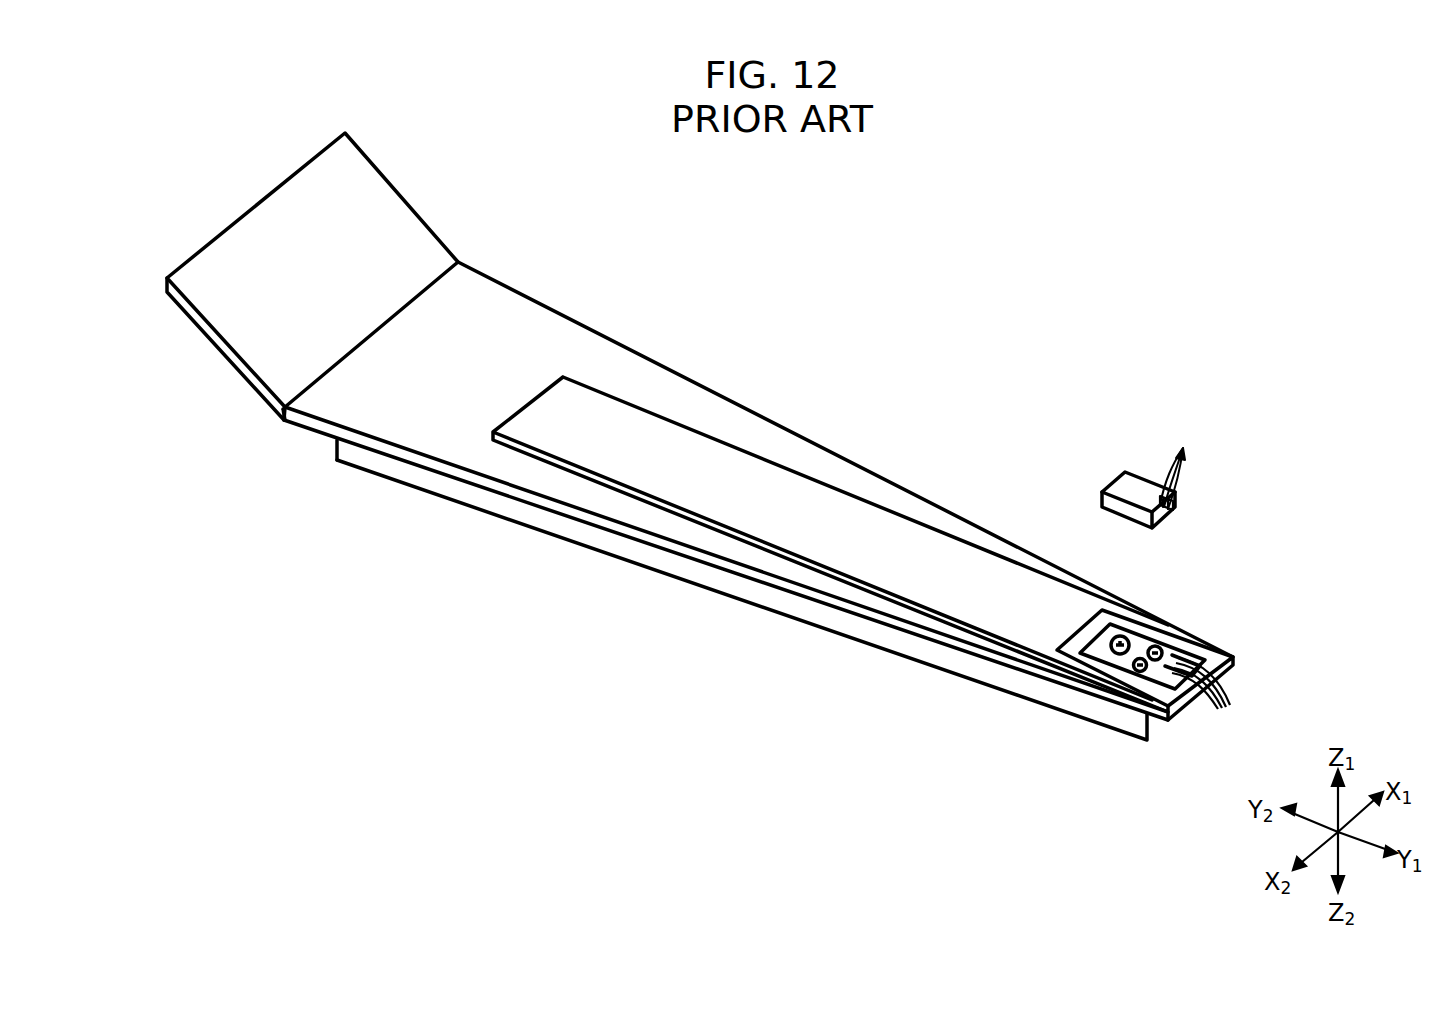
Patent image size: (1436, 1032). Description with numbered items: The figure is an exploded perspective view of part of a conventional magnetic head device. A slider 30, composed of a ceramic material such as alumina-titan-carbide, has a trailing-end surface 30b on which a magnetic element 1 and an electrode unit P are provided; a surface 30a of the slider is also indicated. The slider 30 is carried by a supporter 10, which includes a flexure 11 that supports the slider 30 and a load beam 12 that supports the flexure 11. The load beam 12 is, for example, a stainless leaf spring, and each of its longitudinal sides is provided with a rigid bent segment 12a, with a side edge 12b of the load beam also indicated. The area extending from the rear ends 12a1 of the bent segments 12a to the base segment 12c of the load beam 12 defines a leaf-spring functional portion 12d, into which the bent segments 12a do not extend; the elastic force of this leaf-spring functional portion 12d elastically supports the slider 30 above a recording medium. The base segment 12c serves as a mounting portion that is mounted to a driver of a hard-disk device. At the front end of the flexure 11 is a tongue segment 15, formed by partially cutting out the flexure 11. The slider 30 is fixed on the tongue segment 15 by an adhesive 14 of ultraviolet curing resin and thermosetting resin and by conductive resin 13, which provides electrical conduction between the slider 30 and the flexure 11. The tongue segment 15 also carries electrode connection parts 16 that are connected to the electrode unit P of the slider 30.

The supporter 10 is at (715, 443).
The flexure 11 is at (610, 412).
The load beam 12 is at (700, 436).
The bent segment 12a is at (684, 590).
The rear end of bent segment 12a1 is at (333, 447).
The side edge of load beam 12b is at (588, 505).
The base segment 12c is at (380, 212).
The leaf-spring functional portion 12d is at (284, 420).
The conductive resin 13 is at (1125, 636).
The adhesive 14 is at (1156, 650).
The tongue segment 15 is at (1095, 637).
The electrode connection parts 16 is at (1218, 693).
The slider 30 is at (1156, 473).
The slider top face 30a is at (1105, 483).
The trailing-end surface 30b is at (1175, 495).
The magnetic element 1 is at (1167, 513).
The electrode unit P is at (1172, 466).